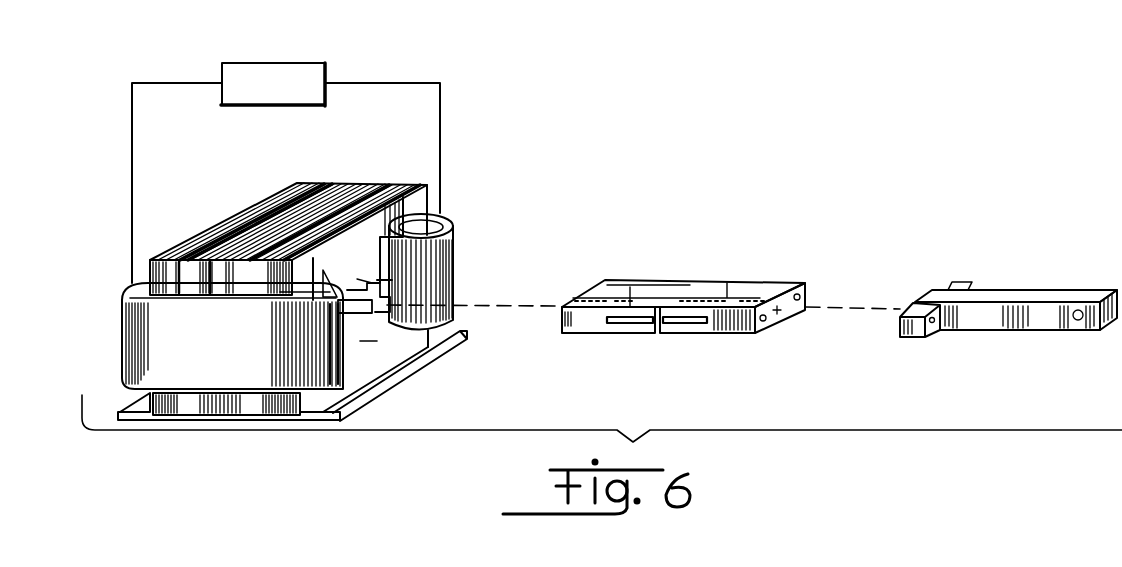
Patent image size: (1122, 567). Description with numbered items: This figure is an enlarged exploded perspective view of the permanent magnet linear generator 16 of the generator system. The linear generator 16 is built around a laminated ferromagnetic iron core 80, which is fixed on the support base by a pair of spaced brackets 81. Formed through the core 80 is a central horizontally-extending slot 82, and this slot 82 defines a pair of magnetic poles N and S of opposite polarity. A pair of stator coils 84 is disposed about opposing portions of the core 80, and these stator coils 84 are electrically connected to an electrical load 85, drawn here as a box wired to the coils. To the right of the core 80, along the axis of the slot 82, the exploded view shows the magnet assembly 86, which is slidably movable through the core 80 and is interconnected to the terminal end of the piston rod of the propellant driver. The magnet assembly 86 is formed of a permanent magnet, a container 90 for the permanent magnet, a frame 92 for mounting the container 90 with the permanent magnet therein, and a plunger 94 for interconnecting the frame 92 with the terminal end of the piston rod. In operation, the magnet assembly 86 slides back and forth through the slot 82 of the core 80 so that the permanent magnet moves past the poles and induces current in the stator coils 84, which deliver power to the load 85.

The permanent magnet linear generator 16 is at (247, 200).
The laminated ferromagnetic iron core 80 is at (327, 183).
The spaced brackets 81 is at (132, 413).
The central horizontally-extending slot 82 is at (390, 313).
The stator coils 84 is at (245, 390).
The electrical load 85 is at (330, 73).
The magnet assembly 86 is at (709, 307).
The container 90 is at (690, 297).
The frame 92 is at (608, 333).
The plunger 94 is at (1013, 290).